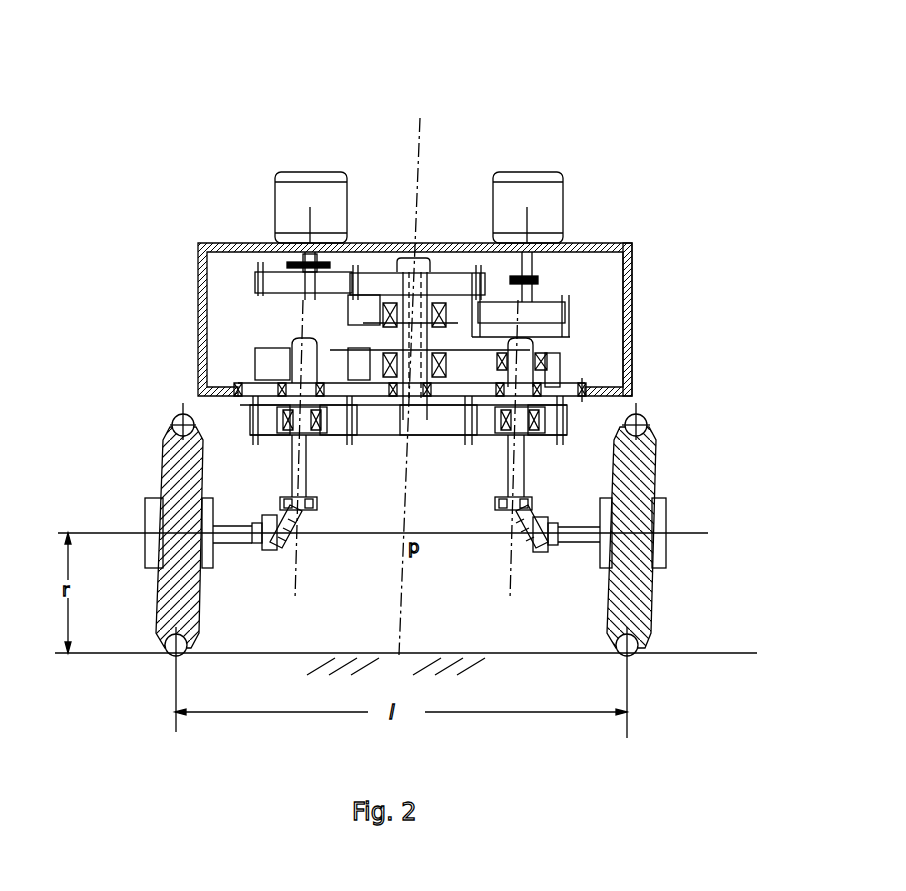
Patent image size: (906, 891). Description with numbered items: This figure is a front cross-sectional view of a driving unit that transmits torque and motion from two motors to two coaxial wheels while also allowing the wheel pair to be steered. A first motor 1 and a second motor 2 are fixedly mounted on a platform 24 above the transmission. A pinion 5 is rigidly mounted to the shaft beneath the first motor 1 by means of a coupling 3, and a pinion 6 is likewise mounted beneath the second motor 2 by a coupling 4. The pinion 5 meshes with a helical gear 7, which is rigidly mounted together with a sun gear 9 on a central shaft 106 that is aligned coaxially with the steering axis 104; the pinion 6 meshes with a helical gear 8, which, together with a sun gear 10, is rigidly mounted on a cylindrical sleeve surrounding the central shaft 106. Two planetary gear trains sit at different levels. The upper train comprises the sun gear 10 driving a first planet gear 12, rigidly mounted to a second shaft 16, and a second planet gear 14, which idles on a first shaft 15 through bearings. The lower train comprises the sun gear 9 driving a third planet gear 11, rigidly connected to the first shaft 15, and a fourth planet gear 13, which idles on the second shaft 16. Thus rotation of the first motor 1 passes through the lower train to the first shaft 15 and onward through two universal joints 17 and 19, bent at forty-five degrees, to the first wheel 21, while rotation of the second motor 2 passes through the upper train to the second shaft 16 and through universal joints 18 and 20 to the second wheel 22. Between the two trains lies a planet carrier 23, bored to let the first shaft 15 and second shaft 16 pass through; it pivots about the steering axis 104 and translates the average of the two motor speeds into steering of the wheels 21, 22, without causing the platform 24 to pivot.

The first motor 1 is at (275, 213).
The second motor 2 is at (563, 215).
The coupling 3 is at (242, 243).
The coupling 4 is at (538, 278).
The pinion 5 is at (290, 283).
The pinion 6 is at (547, 312).
The helical gear 7 is at (450, 285).
The helical gear 8 is at (363, 312).
The sun gear 9 is at (418, 425).
The sun gear 10 is at (370, 368).
The third planet gear 11 is at (545, 422).
The first planet gear 12 is at (268, 367).
The fourth planet gear 13 is at (263, 415).
The second planet gear 14 is at (550, 363).
The first shaft 15 is at (523, 453).
The second shaft 16 is at (290, 460).
The universal joint 17 is at (505, 508).
The universal joint 18 is at (303, 507).
The universal joint 19 is at (543, 555).
The universal joint 20 is at (263, 547).
The first wheel 21 is at (638, 600).
The second wheel 22 is at (160, 503).
The planet carrier 23 is at (585, 390).
The platform 24 is at (613, 248).
The steering axis 104 is at (417, 142).
The central shaft 106 is at (403, 240).